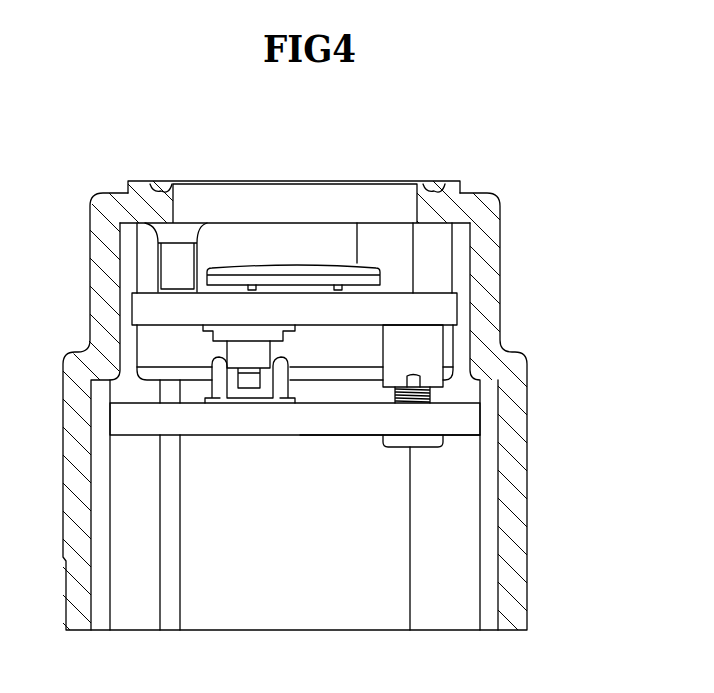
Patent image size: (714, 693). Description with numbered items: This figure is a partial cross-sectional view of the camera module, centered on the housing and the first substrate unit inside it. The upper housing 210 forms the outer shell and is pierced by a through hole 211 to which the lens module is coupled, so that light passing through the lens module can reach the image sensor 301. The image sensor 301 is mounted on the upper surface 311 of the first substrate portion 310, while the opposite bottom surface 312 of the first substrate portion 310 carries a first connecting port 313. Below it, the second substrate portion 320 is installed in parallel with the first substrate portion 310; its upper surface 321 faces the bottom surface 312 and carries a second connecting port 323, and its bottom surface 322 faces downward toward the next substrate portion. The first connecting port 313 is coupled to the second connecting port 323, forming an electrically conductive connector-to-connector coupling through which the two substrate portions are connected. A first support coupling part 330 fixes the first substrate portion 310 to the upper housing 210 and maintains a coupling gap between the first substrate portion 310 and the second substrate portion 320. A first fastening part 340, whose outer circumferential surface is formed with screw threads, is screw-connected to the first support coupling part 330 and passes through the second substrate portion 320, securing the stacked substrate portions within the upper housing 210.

The upper housing 210 is at (522, 410).
The through hole 211 is at (276, 203).
The image sensor 301 is at (323, 266).
The first substrate portion 310 is at (444, 302).
The upper surface 311 is at (145, 289).
The bottom surface 312 is at (155, 327).
The first connecting port 313 is at (246, 343).
The second substrate portion 320 is at (452, 420).
The upper surface 321 is at (462, 400).
The bottom surface 322 is at (366, 435).
The second connecting port 323 is at (258, 395).
The first support coupling part 330 is at (437, 343).
The first fastening part 340 is at (442, 440).